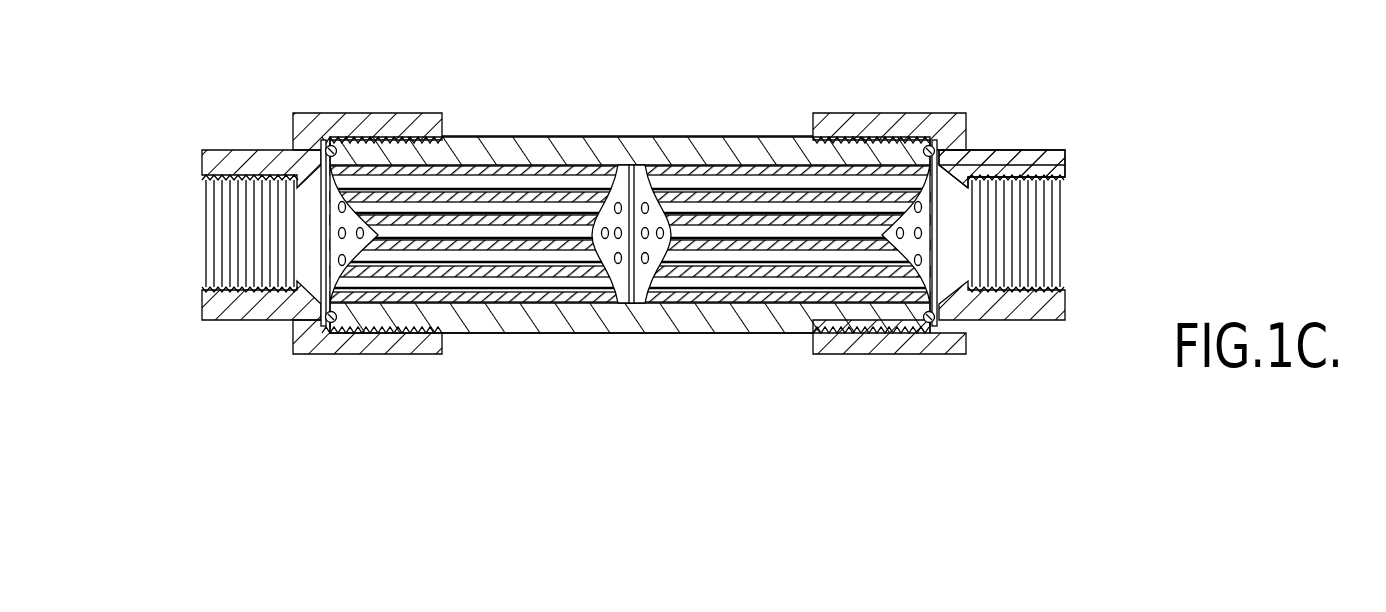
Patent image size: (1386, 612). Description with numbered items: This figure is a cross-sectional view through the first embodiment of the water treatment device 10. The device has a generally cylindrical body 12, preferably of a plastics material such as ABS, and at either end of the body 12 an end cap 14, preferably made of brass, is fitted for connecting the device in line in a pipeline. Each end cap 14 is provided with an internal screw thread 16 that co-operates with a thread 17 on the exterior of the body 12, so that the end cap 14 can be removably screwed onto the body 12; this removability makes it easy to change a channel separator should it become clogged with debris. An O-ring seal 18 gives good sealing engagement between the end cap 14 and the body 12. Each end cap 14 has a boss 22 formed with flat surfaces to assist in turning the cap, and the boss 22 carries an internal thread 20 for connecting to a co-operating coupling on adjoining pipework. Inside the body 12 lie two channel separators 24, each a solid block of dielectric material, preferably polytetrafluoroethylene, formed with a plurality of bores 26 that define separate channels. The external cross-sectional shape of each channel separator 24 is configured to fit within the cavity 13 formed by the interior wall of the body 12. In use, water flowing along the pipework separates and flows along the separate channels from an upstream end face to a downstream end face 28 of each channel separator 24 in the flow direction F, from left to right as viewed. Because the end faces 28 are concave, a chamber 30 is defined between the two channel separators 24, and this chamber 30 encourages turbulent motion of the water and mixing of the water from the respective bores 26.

The water treatment device 10 is at (551, 120).
The body 12 is at (680, 129).
The cavity 13 is at (955, 259).
The end cap 14 is at (359, 113).
The internal screw thread 16 is at (424, 139).
The thread 17 is at (850, 122).
The O-ring seal 18 is at (322, 148).
The internal thread 20 is at (215, 280).
The boss 22 is at (226, 148).
The channel separator 24 is at (490, 324).
The bore 26 is at (532, 284).
The end face 28 is at (648, 195).
The chamber 30 is at (615, 291).
The flow direction F is at (1073, 237).